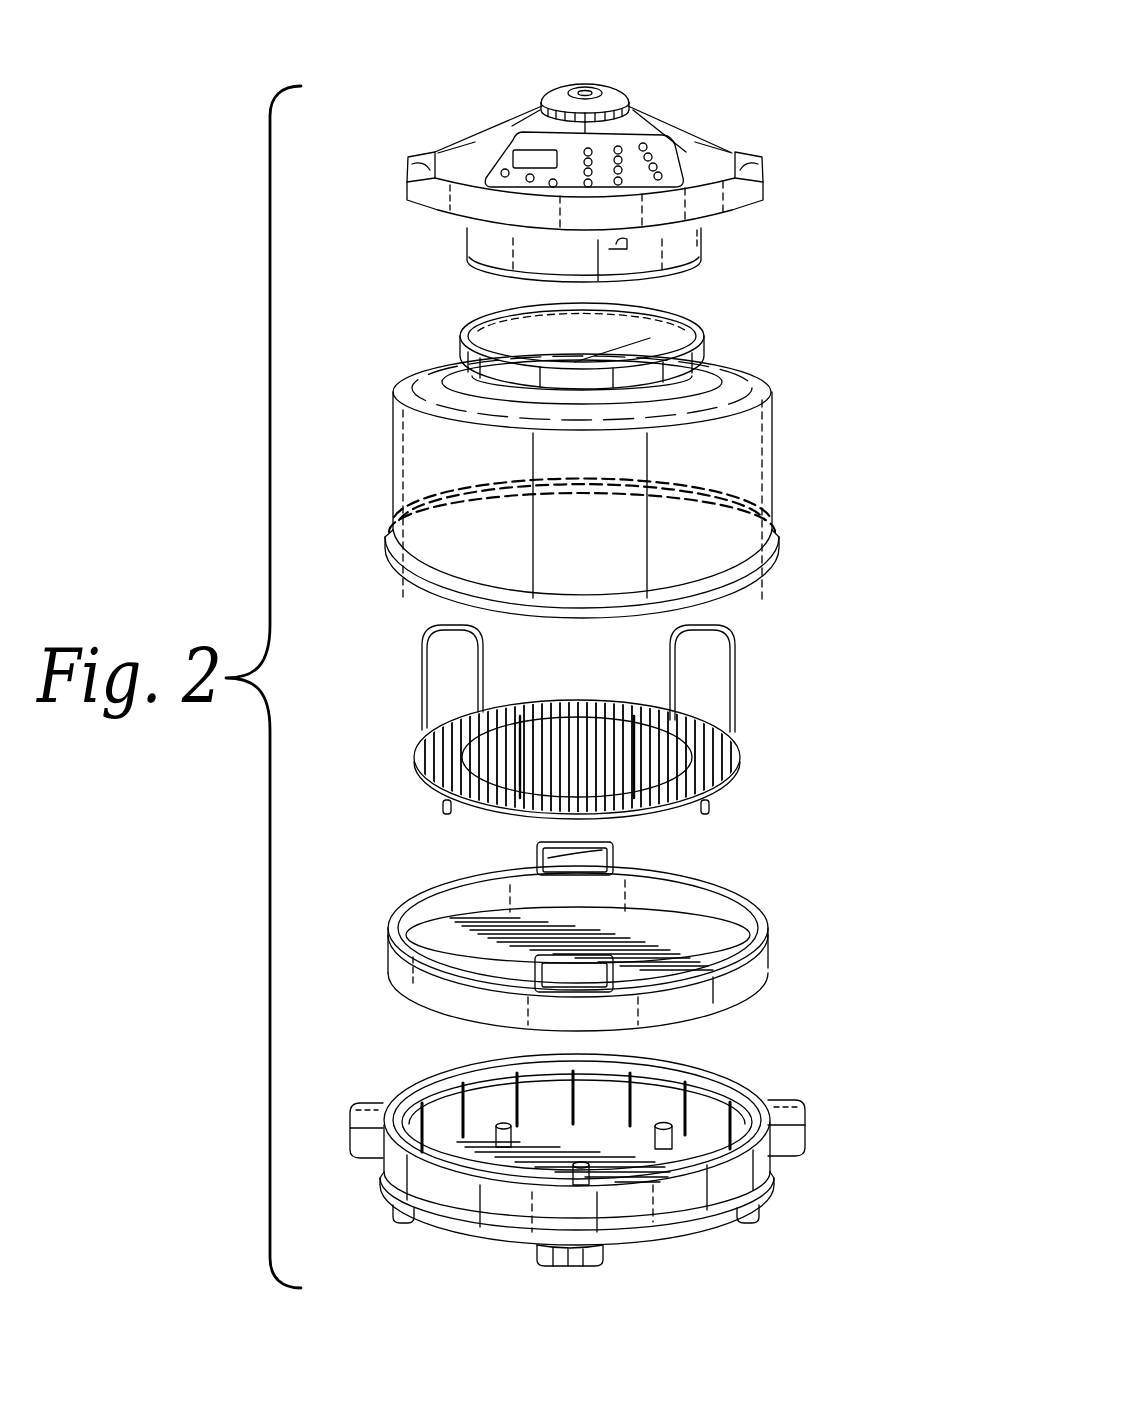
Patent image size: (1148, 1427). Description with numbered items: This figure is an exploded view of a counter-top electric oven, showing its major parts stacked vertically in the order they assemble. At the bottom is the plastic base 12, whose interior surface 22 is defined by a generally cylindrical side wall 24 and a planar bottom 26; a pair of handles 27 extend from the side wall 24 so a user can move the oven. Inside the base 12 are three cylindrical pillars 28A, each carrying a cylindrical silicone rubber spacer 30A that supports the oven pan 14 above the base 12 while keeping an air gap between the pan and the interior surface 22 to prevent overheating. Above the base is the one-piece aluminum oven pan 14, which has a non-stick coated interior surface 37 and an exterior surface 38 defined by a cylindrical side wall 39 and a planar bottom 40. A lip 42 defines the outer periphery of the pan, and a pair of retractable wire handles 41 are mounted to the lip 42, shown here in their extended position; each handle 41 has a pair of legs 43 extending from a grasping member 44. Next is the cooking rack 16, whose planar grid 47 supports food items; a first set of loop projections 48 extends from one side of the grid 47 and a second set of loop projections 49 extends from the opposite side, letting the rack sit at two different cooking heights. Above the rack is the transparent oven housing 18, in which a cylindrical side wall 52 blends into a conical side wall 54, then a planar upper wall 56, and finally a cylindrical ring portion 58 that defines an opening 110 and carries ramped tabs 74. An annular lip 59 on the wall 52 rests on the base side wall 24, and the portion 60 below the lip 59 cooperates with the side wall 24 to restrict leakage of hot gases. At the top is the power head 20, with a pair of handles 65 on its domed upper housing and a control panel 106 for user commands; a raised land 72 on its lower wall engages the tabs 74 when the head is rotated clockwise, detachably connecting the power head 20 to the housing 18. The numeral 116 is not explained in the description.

The base 12 is at (772, 1101).
The oven pan 14 is at (806, 830).
The cooking rack 16 is at (742, 751).
The oven housing 18 is at (776, 450).
The power head 20 is at (676, 120).
The interior surface 22 is at (722, 1086).
The side wall 24 is at (772, 1192).
The bottom 26 is at (352, 1106).
The handles 27 is at (806, 1117).
The cylindrical pillars 28A is at (680, 1100).
The cylindrical spacers 30A is at (672, 1130).
The interior surface 37 is at (452, 945).
The exterior surface 38 is at (396, 962).
The side wall 39 is at (736, 976).
The bottom 40 is at (396, 928).
The retractable handles 41 is at (622, 842).
The lip 42 is at (748, 891).
The legs 43 is at (537, 856).
The grasping member 44 is at (614, 849).
The planar grid 47 is at (700, 720).
The loop projections 48 is at (546, 705).
The loop projections 49 is at (422, 679).
The cylindrical side wall 52 is at (393, 442).
The conical shaped side wall 54 is at (405, 386).
The upper wall 56 is at (440, 372).
The ring portion 58 is at (470, 360).
The annular lip 59 is at (388, 542).
The portion 60 is at (720, 607).
The handles 65 is at (420, 165).
The lands 72 is at (630, 245).
The ramped tabs 74 is at (510, 340).
The control panel 106 is at (505, 138).
The opening 110 is at (520, 350).
The knob 116 is at (540, 106).